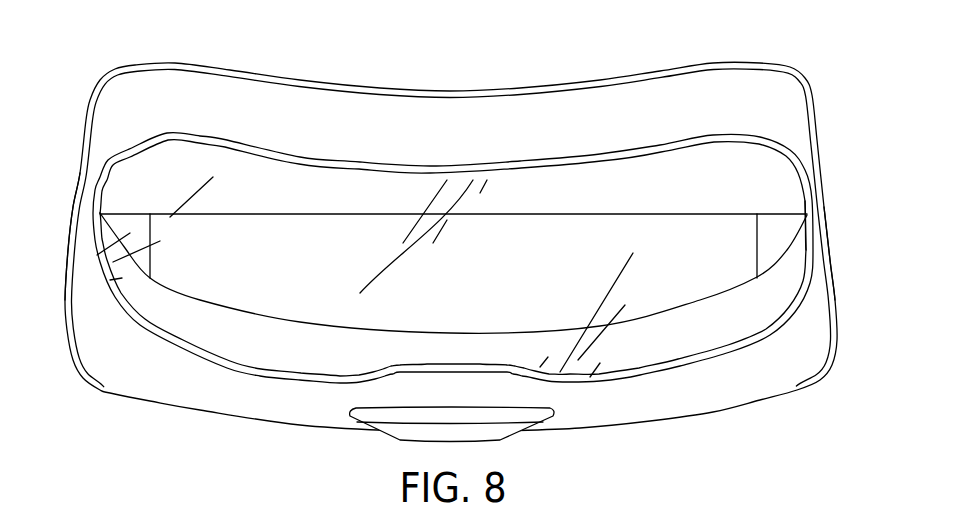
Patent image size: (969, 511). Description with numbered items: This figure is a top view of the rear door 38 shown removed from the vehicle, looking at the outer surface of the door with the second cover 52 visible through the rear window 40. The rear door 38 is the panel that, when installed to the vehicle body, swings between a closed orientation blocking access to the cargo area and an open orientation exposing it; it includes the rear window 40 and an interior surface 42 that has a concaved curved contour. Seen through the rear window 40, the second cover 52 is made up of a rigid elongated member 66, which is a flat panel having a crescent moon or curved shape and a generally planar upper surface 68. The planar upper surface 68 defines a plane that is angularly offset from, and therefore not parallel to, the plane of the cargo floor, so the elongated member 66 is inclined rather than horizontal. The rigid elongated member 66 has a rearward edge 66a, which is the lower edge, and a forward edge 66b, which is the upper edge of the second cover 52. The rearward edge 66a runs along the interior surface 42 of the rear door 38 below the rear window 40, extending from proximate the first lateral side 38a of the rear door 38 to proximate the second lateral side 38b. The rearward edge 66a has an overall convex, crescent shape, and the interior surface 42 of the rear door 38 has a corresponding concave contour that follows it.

The rear door 38 is at (660, 31).
The first lateral side 38a is at (827, 173).
The second lateral side 38b is at (77, 170).
The rear window 40 is at (227, 190).
The interior surface 42 is at (263, 316).
The second cover 52 is at (580, 208).
The rigid elongated member 66 is at (518, 267).
The rearward edge 66a is at (227, 310).
The forward edge 66b is at (274, 213).
The planar upper surface 68 is at (335, 253).